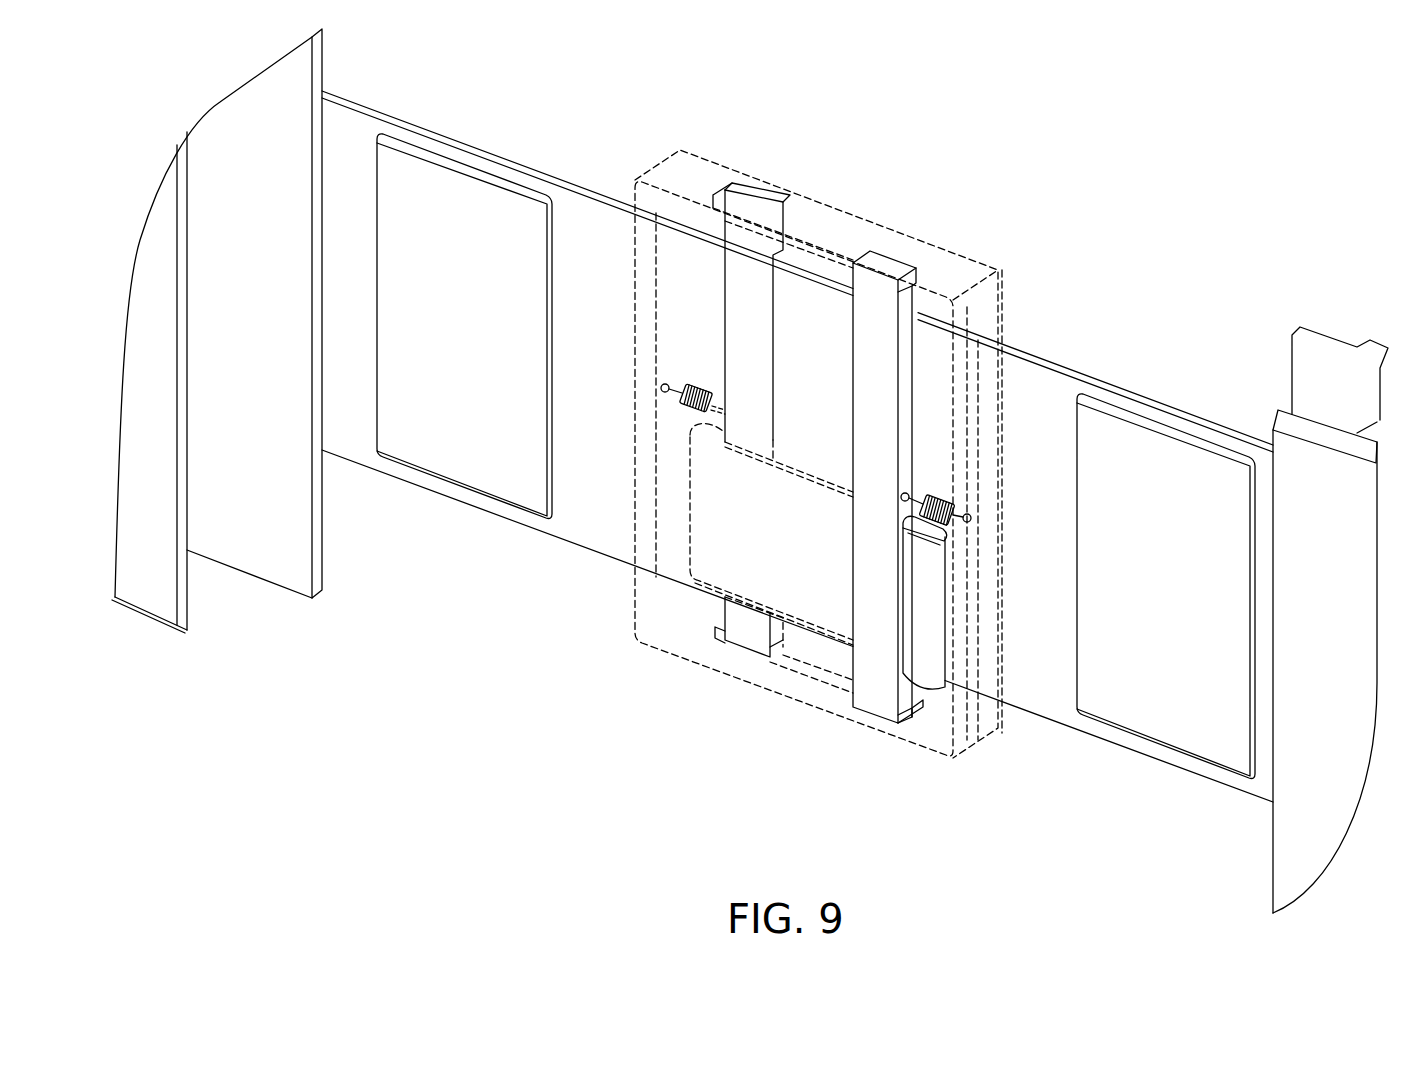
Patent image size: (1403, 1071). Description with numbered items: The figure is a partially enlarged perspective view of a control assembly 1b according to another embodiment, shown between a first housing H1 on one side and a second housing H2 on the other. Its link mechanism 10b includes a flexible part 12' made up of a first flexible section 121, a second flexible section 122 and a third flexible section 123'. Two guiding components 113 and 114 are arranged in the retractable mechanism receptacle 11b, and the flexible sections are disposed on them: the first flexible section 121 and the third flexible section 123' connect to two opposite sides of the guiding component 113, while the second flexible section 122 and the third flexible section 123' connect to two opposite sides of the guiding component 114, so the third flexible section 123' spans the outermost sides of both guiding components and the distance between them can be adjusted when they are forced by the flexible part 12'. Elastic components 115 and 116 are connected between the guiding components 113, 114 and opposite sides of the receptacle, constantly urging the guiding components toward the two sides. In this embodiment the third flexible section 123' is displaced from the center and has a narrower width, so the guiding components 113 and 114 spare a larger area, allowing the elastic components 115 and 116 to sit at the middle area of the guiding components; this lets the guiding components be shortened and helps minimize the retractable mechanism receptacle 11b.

The control assembly 1b is at (604, 43).
The first housing H1 is at (316, 58).
The second housing H2 is at (1323, 343).
The link mechanism 10b is at (1057, 217).
The retractable mechanism receptacle 11b is at (832, 200).
The flexible part 12' is at (806, 469).
The guiding component 113 is at (885, 267).
The guiding component 114 is at (760, 198).
The elastic component 115 is at (935, 495).
The elastic component 116 is at (697, 387).
The first flexible section 121 is at (512, 163).
The second flexible section 122 is at (1117, 387).
The third flexible section 123' is at (985, 655).